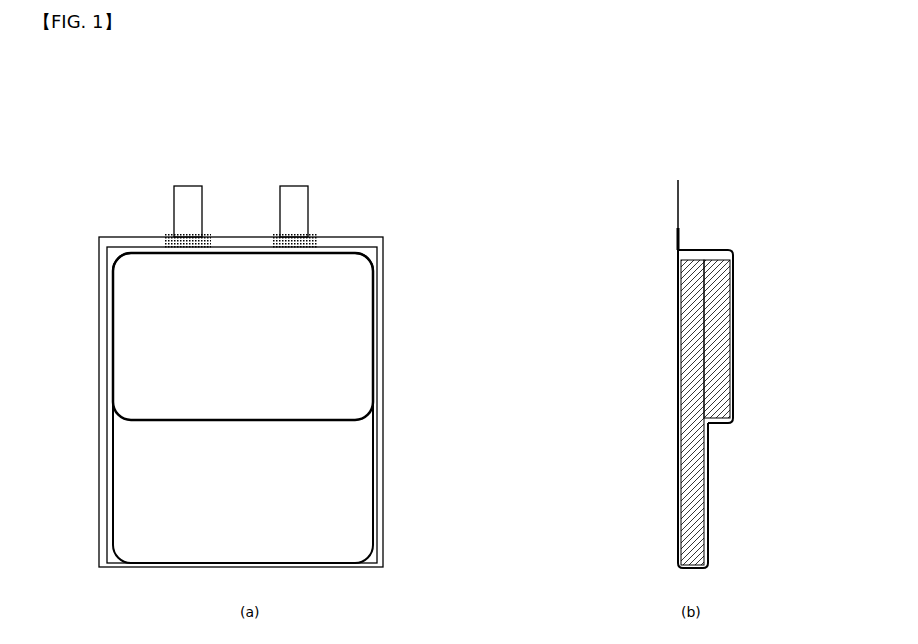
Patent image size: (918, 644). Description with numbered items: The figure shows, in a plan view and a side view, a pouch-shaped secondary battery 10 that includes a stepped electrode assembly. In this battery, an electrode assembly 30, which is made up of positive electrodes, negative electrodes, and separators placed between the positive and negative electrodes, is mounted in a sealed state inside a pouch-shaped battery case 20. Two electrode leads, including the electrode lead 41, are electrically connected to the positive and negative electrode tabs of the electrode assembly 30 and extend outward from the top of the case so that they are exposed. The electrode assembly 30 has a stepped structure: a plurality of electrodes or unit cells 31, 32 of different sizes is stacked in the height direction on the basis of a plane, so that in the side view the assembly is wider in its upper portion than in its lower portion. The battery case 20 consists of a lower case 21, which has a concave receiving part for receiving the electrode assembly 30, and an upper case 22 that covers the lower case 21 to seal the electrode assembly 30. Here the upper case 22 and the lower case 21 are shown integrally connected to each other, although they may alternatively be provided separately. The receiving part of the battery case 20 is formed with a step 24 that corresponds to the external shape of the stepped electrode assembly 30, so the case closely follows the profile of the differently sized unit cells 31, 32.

The pouch-shaped secondary battery 10 is at (78, 168).
The pouch-shaped battery case 20 is at (384, 340).
The lower case 21 is at (734, 276).
The upper case 22 is at (677, 359).
The step 24 is at (735, 436).
The electrode assembly 30 is at (371, 380).
The electrode or unit cell 31 is at (693, 510).
The electrode or unit cell 32 is at (718, 338).
The electrode lead 41 is at (291, 192).